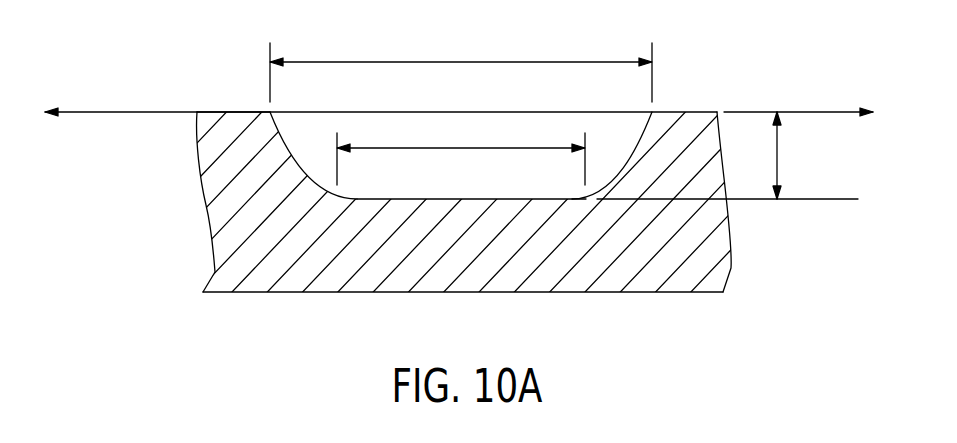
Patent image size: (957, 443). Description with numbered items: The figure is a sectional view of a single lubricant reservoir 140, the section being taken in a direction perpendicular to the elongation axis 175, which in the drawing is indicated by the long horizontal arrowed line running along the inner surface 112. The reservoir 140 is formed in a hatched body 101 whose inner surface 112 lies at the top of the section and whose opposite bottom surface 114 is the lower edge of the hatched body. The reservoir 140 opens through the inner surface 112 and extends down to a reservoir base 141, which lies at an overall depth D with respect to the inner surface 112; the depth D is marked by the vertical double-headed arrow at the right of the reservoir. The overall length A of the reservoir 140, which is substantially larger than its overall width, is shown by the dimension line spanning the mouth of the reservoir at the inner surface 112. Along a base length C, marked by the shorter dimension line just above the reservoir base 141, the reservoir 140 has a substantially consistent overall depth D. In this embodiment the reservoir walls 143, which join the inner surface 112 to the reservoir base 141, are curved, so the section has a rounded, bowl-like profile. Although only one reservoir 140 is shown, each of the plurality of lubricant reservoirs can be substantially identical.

The substrate 101 is at (228, 243).
The inner surface 112 is at (225, 110).
The bottom surface of substrate 114 is at (647, 292).
The lubricant reservoir 140 is at (547, 137).
The reservoir base 141 is at (502, 199).
The reservoir walls 143 is at (277, 175).
The elongation axis 175 is at (822, 112).
The overall length A is at (482, 62).
The base length C is at (455, 148).
The overall depth D is at (780, 155).